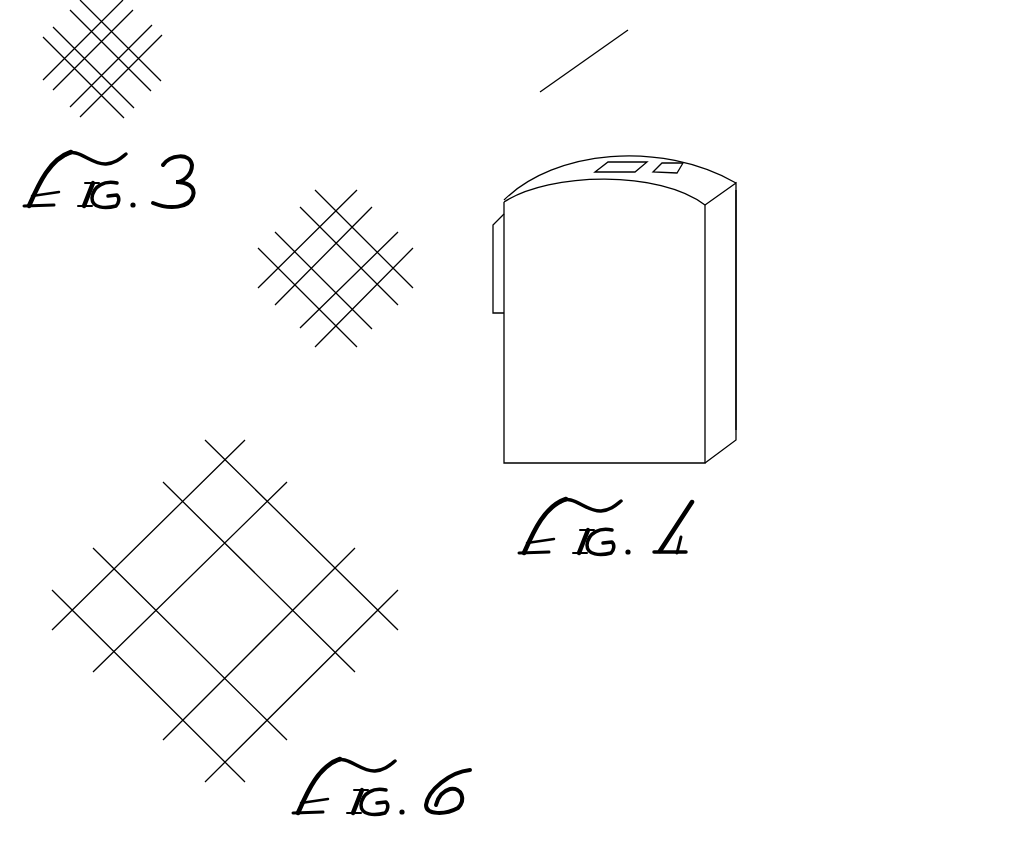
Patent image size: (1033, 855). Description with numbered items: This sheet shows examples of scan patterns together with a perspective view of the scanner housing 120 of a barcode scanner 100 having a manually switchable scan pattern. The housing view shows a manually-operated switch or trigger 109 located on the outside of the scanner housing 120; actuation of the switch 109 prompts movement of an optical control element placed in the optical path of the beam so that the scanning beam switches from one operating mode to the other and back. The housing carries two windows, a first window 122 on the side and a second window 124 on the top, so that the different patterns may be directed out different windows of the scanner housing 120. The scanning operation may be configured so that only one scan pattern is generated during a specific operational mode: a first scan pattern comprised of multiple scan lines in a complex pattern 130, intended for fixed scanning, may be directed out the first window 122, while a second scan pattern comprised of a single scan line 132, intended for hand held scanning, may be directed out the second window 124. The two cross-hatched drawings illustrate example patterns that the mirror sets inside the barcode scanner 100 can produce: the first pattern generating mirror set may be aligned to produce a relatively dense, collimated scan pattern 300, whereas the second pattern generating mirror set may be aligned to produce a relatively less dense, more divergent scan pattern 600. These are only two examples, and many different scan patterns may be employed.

In FIG. 4, the barcode scanner 100 is at (778, 173).
In FIG. 4, the switch 109 is at (668, 172).
In FIG. 4, the scanner housing 120 is at (741, 355).
In FIG. 4, the first window 122 is at (492, 295).
In FIG. 4, the second window 124 is at (622, 165).
In FIG. 4, the complex pattern 130 is at (327, 335).
In FIG. 4, the single scan line 132 is at (578, 63).
In FIG. 3, the scan pattern 300 is at (150, 50).
In FIG. 6, the scan pattern 600 is at (290, 698).